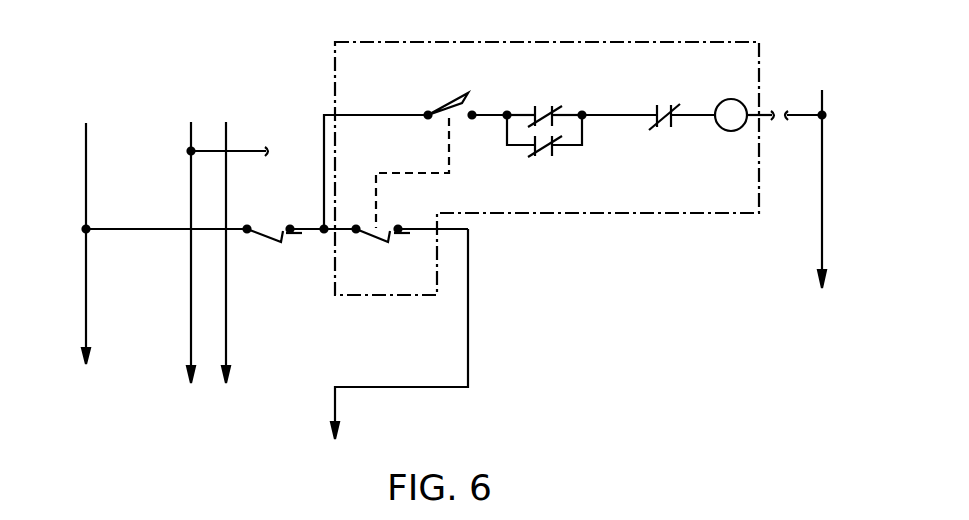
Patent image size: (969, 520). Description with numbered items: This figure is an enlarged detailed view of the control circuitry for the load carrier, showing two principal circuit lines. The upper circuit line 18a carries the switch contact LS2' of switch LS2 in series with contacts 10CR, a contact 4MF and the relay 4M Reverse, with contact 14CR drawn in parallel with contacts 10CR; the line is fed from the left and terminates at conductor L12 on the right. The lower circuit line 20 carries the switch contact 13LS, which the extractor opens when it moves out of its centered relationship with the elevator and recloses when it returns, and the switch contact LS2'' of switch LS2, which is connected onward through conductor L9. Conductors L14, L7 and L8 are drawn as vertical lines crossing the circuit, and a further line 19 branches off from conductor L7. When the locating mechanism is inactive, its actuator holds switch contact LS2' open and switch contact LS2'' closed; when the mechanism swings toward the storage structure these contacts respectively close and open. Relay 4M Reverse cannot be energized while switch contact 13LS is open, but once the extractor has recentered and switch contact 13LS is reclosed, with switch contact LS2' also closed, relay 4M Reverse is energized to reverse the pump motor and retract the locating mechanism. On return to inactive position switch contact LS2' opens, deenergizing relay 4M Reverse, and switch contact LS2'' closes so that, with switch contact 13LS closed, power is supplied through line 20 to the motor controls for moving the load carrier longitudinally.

The line 18a is at (63, 126).
The aisle or travel zone 19 is at (52, 161).
The line 20 is at (58, 229).
The conductor L14 is at (87, 306).
The conductor L7 is at (190, 340).
The conductor L8 is at (226, 347).
The conductor L9 is at (422, 388).
The conductor L12 is at (822, 94).
The switch contact 13LS is at (276, 226).
The switch contact LS2' is at (441, 143).
The switch contact LS2'' is at (411, 229).
The control relay contact 10CR is at (545, 104).
The control relay contact 14CR is at (548, 151).
The forward contactor contact 4MF is at (660, 106).
The relay 4M Reverse 4M is at (729, 98).